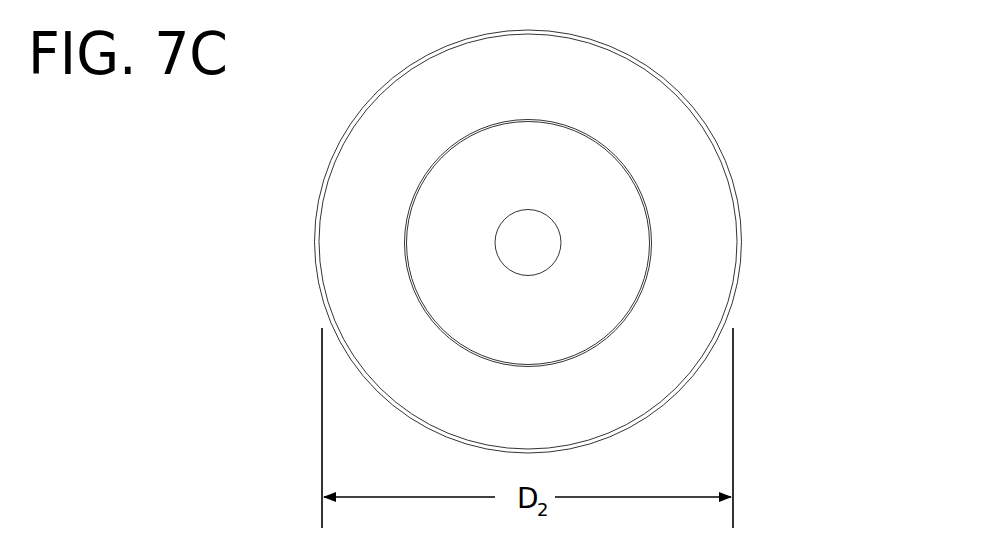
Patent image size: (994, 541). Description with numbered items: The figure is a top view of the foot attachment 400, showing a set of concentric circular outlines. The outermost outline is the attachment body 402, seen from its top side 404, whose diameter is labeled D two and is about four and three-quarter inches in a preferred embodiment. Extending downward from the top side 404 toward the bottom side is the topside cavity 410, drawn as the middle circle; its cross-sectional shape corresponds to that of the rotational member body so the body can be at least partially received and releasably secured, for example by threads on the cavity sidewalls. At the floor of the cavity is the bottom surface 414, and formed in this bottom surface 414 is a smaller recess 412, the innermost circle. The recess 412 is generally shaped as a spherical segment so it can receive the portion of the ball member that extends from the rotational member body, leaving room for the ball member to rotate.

The foot attachment 400 is at (385, 36).
The attachment body 402 is at (264, 350).
The top side 404 is at (663, 150).
The topside cavity 410 is at (459, 213).
The recess 412 is at (527, 242).
The bottom surface 414 is at (594, 208).